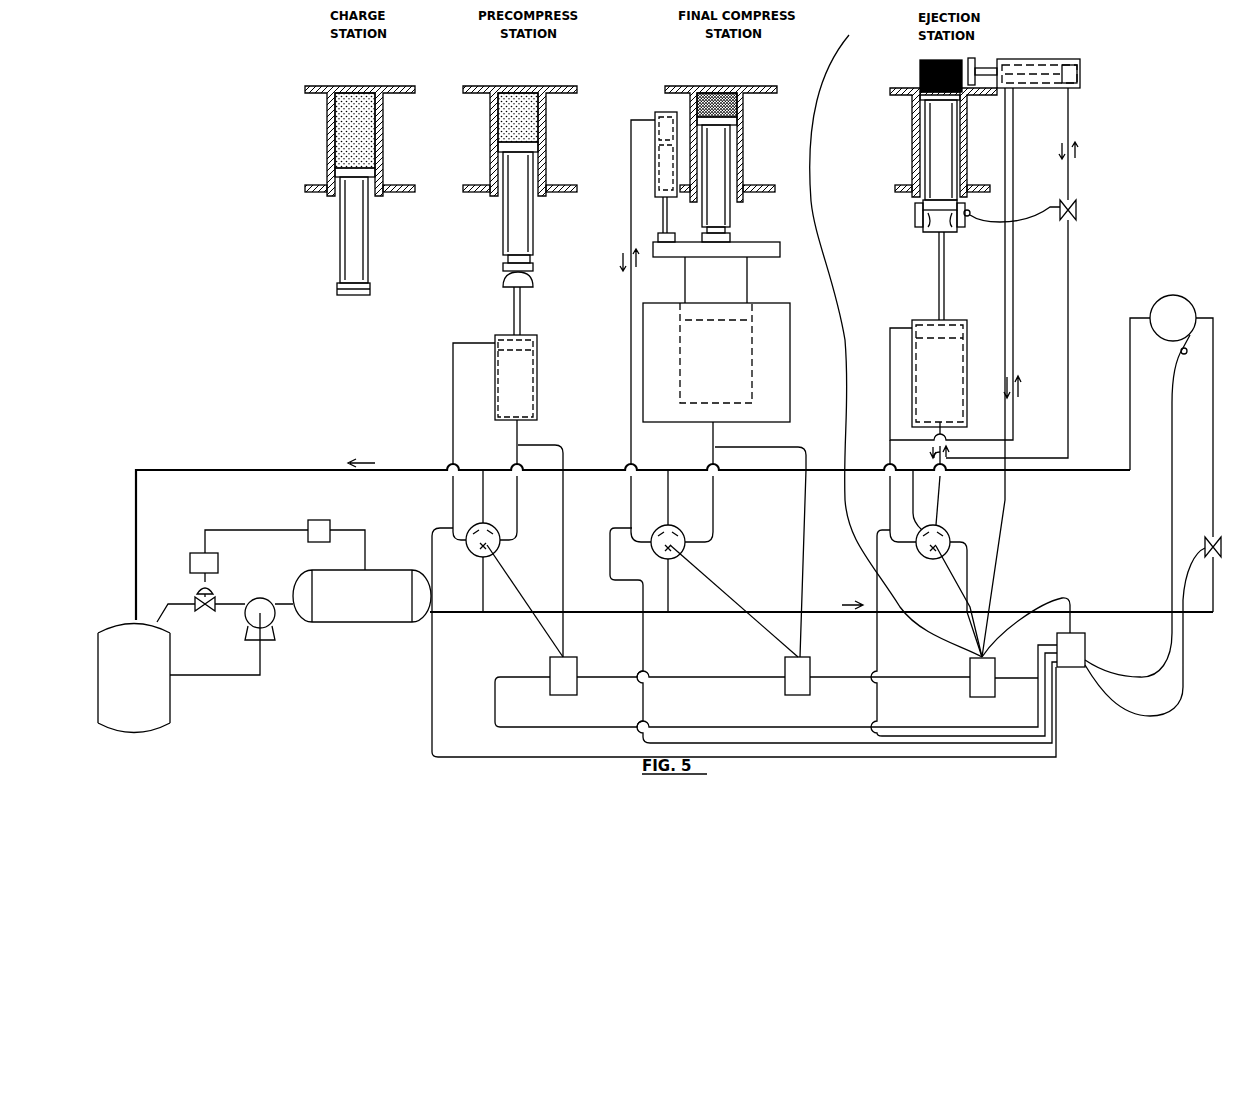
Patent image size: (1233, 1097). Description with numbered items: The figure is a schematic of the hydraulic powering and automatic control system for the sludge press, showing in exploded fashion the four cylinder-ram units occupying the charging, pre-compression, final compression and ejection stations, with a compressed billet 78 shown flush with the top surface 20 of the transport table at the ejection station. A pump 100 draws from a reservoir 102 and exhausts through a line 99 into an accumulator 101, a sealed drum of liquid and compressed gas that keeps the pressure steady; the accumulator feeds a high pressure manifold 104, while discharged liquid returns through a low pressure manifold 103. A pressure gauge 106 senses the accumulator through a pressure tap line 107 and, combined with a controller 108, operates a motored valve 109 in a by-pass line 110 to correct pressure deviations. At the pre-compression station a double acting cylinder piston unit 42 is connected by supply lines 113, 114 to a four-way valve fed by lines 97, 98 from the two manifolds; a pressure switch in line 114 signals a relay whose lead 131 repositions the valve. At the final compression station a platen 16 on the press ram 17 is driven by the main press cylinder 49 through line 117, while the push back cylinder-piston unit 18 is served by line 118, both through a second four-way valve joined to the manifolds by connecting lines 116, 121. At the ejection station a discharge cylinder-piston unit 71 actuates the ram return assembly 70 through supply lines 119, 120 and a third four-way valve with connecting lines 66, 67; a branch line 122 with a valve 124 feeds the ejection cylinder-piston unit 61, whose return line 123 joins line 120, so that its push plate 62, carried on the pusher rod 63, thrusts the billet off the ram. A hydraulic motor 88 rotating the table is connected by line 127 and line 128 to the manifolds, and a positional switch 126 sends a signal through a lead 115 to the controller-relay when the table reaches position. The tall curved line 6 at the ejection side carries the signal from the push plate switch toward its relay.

The pressure line 6 is at (855, 39).
The platen 16 is at (716, 249).
The press ram 17 is at (718, 293).
The push back cylinder-piston unit 18 is at (655, 170).
The top surface 20 is at (385, 86).
The double acting cylinder piston unit 42 is at (540, 372).
The main press cylinder 49 is at (790, 362).
The ejection cylinder-piston unit 61 is at (1071, 55).
The push plate 62 is at (983, 55).
The pusher rod 63 is at (985, 70).
The connecting line 66 is at (967, 549).
The connecting line 67 is at (913, 494).
The ram return assembly 70 is at (918, 224).
The discharge cylinder-piston unit 71 is at (968, 348).
The pressed billet 78 is at (923, 72).
The hydraulic motor 88 is at (1186, 298).
The line 97 is at (483, 590).
The line 98 is at (483, 488).
The line 99 is at (284, 598).
The pump 100 is at (274, 636).
The accumulator 101 is at (378, 603).
The reservoir 102 is at (150, 691).
The low pressure manifold 103 is at (218, 465).
The high pressure manifold 104 is at (587, 611).
The pressure gauge 106 is at (330, 518).
The pressure tap line 107 is at (366, 556).
The controller 108 is at (194, 553).
The motored valve 109 is at (213, 588).
The by-pass line 110 is at (170, 619).
The supply line 113 is at (455, 424).
The supply line 114 is at (517, 436).
The lead 115 is at (1146, 682).
The connecting line 116 is at (668, 588).
The line 117 is at (715, 437).
The line 118 is at (631, 222).
The supply line 119 is at (940, 496).
The supply line 120 is at (890, 502).
The connecting line 121 is at (668, 498).
The branch line 122 is at (1068, 296).
The return line 123 is at (1013, 268).
The valve 124 is at (1076, 207).
The positional switch 126 is at (1186, 356).
The line 127 is at (1213, 453).
The line 128 is at (1130, 373).
The lead 131 is at (510, 578).